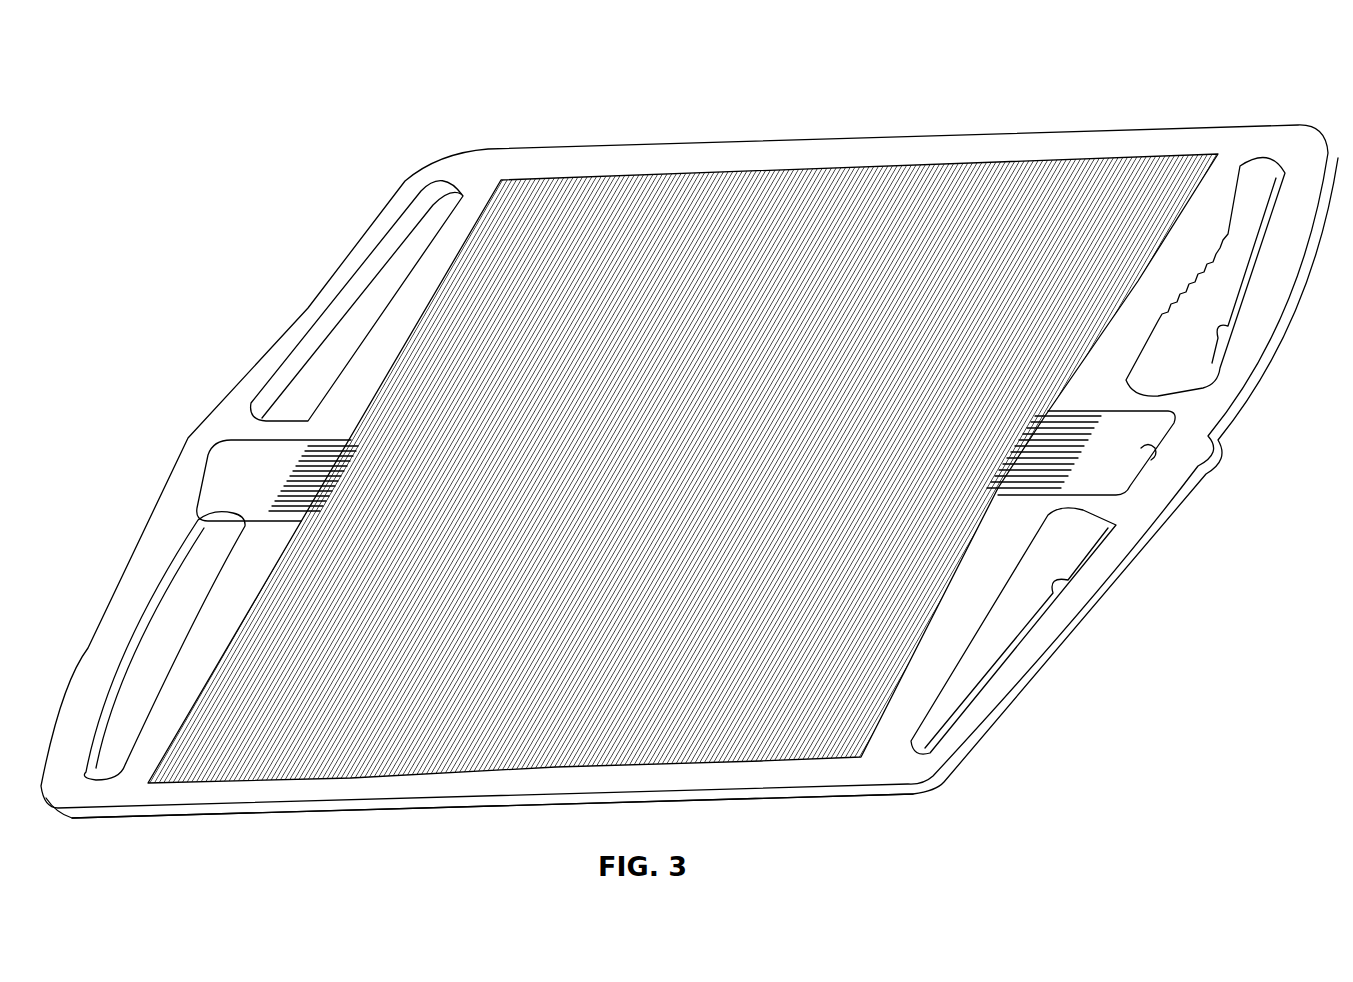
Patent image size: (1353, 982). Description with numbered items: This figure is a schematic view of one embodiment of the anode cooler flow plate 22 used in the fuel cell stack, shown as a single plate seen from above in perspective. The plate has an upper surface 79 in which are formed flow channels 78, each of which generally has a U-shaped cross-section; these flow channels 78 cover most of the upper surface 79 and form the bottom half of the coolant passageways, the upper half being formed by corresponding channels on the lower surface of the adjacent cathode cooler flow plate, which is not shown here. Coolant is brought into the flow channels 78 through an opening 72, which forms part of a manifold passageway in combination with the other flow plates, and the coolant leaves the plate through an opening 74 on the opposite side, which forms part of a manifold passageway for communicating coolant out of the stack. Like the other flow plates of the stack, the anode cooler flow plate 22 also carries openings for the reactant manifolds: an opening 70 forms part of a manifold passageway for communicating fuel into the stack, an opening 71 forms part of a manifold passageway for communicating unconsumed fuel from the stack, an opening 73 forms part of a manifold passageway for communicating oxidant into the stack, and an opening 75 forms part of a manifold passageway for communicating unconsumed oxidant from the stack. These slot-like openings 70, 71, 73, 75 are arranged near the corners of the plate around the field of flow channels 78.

The anode cooler flow plate 22 is at (1097, 120).
The opening 70 is at (1205, 318).
The opening 71 is at (100, 732).
The opening 72 is at (1130, 455).
The opening 73 is at (1036, 593).
The opening 74 is at (237, 490).
The opening 75 is at (337, 328).
The flow channels 78 is at (1007, 180).
The upper surface 79 is at (877, 748).